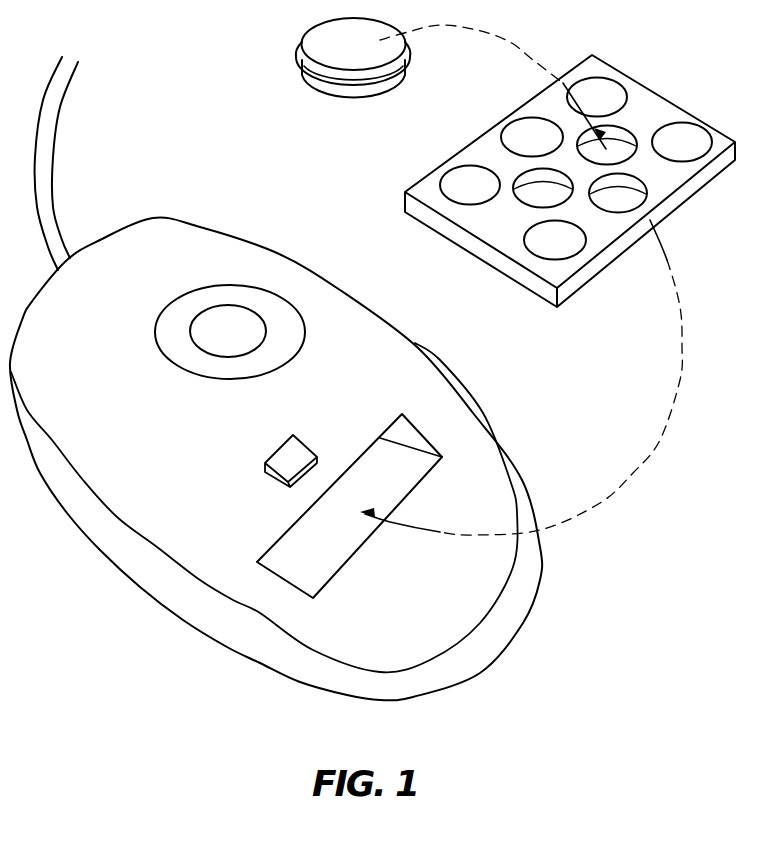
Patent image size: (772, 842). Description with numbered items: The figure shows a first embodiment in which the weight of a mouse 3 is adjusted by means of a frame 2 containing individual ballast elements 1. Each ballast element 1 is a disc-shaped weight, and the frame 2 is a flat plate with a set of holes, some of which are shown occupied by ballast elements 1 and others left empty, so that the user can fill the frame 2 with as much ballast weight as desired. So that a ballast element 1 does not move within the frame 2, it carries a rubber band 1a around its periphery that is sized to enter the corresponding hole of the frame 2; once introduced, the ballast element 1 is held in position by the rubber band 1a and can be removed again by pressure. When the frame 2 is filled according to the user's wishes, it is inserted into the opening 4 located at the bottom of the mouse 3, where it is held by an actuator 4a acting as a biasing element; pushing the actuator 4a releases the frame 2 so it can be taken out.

The ballast element 1 is at (408, 32).
The rubber band 1a is at (298, 63).
The frame 2 is at (650, 117).
The mouse 3 is at (89, 345).
The opening 4 is at (309, 560).
The actuator 4a is at (267, 463).